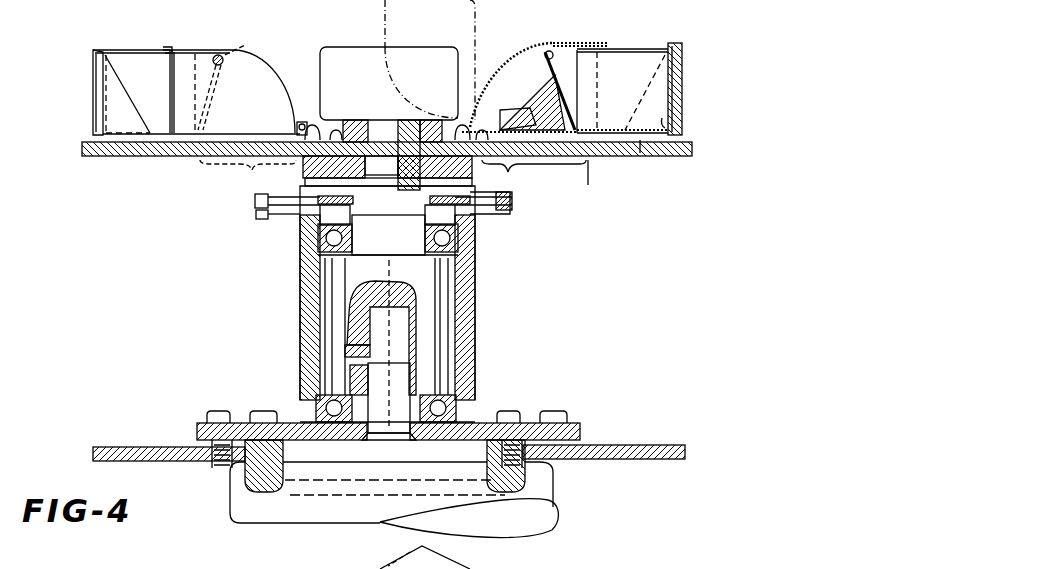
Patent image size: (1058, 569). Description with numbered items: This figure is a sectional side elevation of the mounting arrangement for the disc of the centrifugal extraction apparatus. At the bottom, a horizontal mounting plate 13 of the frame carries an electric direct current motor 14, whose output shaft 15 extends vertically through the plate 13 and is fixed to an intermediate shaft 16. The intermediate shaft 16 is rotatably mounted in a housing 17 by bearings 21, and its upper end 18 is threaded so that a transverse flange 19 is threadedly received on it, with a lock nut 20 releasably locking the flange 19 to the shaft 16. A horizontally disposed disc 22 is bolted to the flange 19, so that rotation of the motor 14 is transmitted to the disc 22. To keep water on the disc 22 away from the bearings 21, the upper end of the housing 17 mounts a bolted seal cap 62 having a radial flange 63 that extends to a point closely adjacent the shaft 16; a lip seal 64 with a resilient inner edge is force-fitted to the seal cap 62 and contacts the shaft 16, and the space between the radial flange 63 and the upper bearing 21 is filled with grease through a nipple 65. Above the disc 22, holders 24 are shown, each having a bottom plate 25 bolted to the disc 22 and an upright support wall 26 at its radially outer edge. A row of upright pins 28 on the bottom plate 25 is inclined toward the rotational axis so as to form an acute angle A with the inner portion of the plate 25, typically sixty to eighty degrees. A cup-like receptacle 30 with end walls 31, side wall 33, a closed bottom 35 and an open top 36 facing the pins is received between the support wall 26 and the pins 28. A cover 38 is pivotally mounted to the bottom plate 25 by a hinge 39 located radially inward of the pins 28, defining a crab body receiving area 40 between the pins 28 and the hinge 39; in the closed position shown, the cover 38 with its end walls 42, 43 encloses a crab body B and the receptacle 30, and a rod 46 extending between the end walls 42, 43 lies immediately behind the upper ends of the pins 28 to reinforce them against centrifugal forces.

The horizontal mounting plate 13 is at (150, 446).
The electric direct current motor 14 is at (345, 515).
The output shaft 15 is at (380, 362).
The intermediate shaft 16 is at (395, 251).
The housing 17 is at (475, 288).
The upper threaded end 18 is at (378, 120).
The transverse flange 19 is at (500, 196).
The lock nut 20 is at (360, 112).
The bearings 21 is at (408, 268).
The disc 22 is at (172, 160).
The holder 24 is at (80, 70).
The bottom plate 25 is at (256, 126).
The upright support wall 26 is at (95, 100).
The upright pins 28 is at (283, 68).
The cup-like receptacle 30 is at (138, 45).
The end wall 31 is at (655, 155).
The side wall 33 is at (674, 46).
The closed bottom 35 is at (672, 118).
The open top 36 is at (588, 186).
The cover 38 is at (210, 46).
The hinge 39 is at (303, 121).
The crab body receiving area 40 is at (250, 172).
The end wall 42 is at (548, 48).
The end wall 43 is at (300, 78).
The rod 46 is at (228, 45).
The seal cap 62 is at (268, 201).
The radial flange 63 is at (394, 199).
The lip seal 64 is at (396, 165).
The nipple 65 is at (258, 218).
The acute angle A is at (226, 80).
The crab body B is at (532, 102).